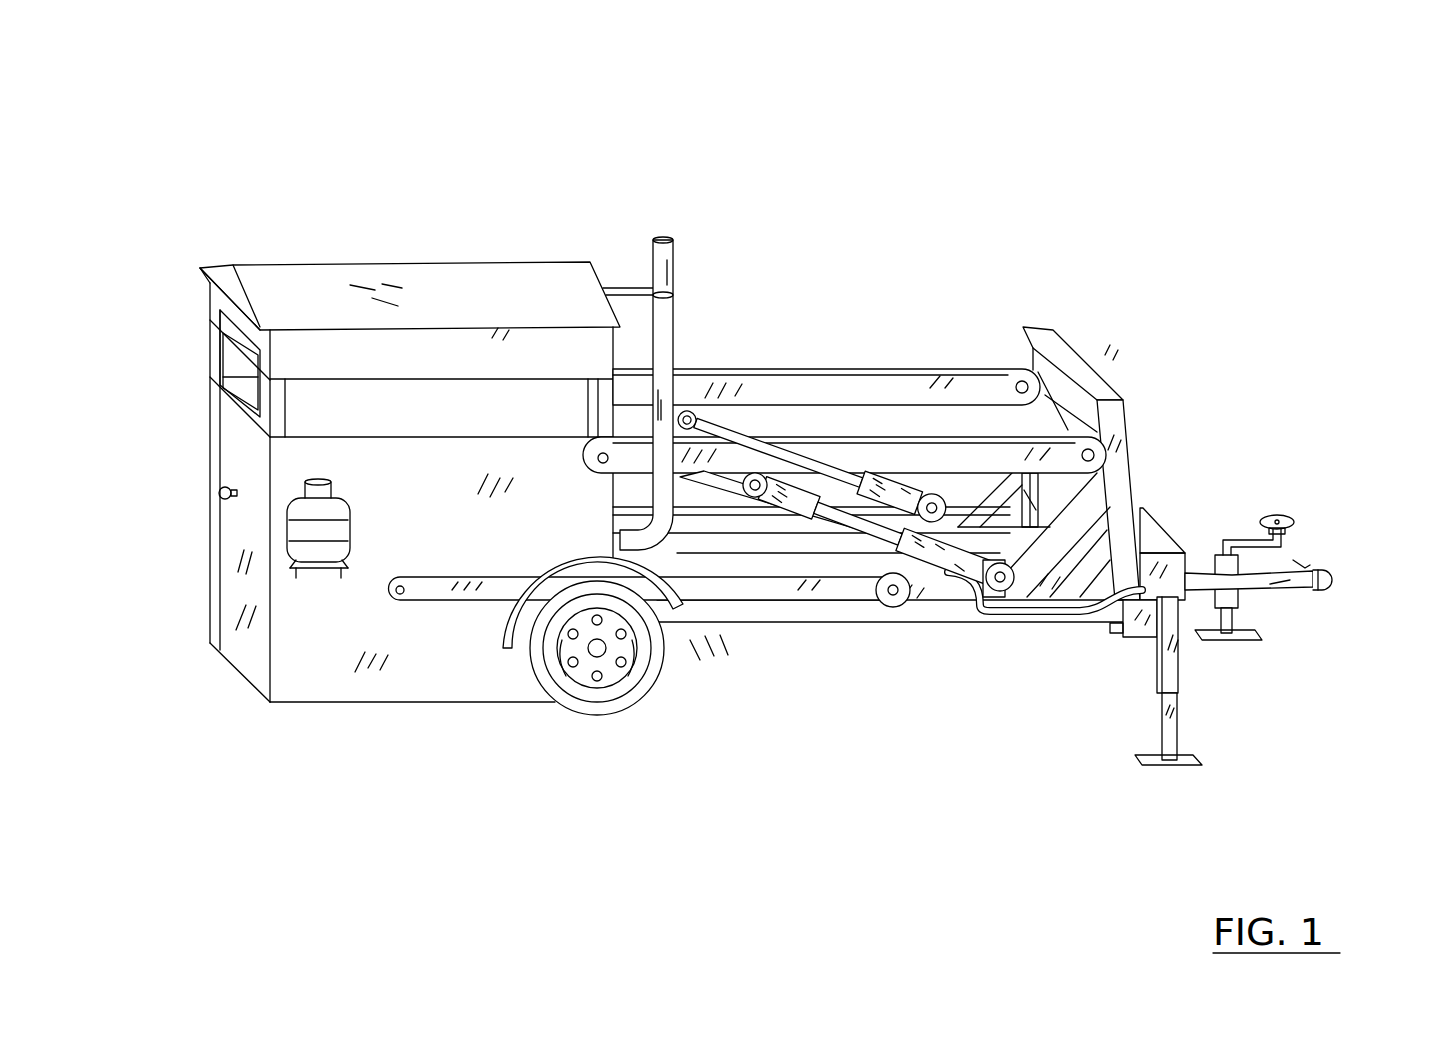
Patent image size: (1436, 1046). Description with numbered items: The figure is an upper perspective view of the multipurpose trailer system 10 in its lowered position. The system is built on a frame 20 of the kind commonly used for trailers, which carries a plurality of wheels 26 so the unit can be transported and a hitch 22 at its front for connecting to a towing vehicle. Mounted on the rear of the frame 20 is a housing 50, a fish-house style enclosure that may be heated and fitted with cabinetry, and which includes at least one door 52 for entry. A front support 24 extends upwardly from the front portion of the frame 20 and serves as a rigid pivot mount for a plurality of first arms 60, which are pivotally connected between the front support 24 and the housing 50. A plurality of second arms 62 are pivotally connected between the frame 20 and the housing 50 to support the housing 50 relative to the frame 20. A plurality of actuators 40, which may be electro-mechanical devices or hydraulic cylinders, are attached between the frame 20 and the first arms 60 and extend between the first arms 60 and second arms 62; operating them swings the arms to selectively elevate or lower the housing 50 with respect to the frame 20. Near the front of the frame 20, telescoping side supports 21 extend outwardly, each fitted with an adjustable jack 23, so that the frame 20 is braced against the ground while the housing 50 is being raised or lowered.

The multipurpose trailer system 10 is at (1232, 140).
The frame 20 is at (915, 637).
The side supports 21 is at (1147, 640).
The hitch 22 is at (1302, 587).
The adjustable jack 23 is at (1173, 683).
The front support 24 is at (1123, 437).
The wheels 26 is at (620, 700).
The actuators 40 is at (927, 553).
The housing 50 is at (398, 692).
The door 52 is at (237, 652).
The first arms 60 is at (787, 437).
The second arms 62 is at (738, 525).